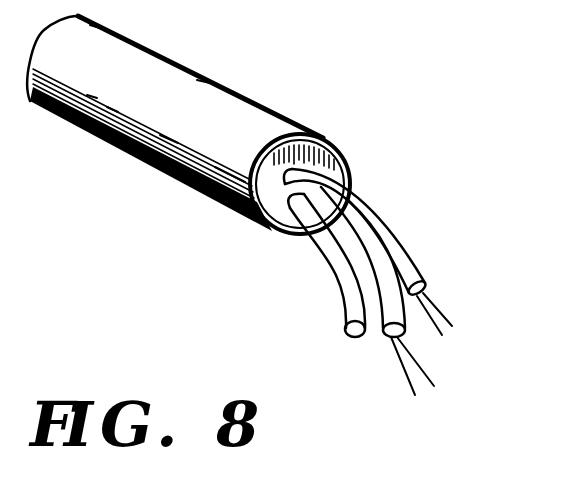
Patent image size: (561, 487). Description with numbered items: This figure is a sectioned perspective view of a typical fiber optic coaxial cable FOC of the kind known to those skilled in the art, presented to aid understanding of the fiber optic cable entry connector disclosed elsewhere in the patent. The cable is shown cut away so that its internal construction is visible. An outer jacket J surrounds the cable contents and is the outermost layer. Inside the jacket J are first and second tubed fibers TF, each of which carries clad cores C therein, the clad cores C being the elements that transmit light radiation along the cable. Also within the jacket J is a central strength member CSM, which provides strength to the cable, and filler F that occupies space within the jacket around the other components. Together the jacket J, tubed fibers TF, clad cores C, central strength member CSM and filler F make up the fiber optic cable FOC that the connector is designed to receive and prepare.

The fiber optic cable FOC is at (244, 80).
The jacket J is at (267, 229).
The filler F is at (327, 160).
The central strength member CSM is at (340, 264).
The tubed fibers TF is at (357, 236).
The clad cores C is at (438, 306).